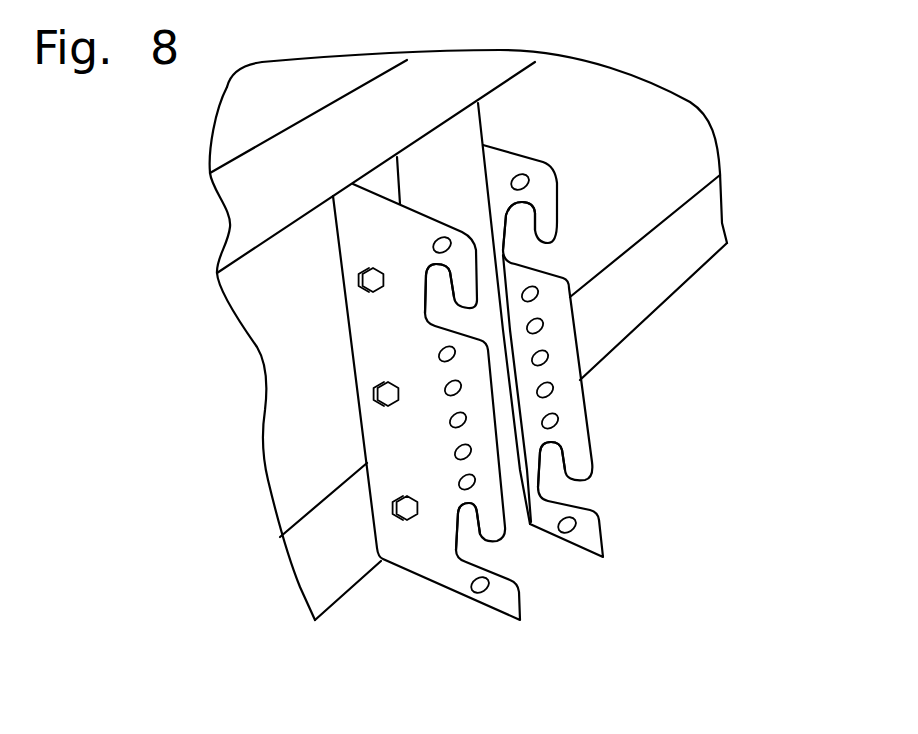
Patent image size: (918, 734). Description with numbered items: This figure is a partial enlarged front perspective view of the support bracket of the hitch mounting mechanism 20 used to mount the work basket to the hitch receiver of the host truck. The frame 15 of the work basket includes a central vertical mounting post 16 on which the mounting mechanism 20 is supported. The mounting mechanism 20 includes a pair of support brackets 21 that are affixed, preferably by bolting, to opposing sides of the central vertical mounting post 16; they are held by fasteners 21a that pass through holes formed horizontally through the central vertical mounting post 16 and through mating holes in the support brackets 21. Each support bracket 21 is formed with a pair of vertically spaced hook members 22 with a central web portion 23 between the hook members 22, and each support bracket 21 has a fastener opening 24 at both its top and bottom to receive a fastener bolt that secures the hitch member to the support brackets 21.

The frame 15 is at (282, 143).
The central vertical mounting post 16 is at (440, 150).
The mounting mechanism 20 is at (456, 350).
The support bracket 21 is at (497, 157).
The fastener 21a is at (362, 277).
The hook member 22 is at (532, 212).
The central web portion 23 is at (558, 320).
The fastener opening 24 is at (529, 181).